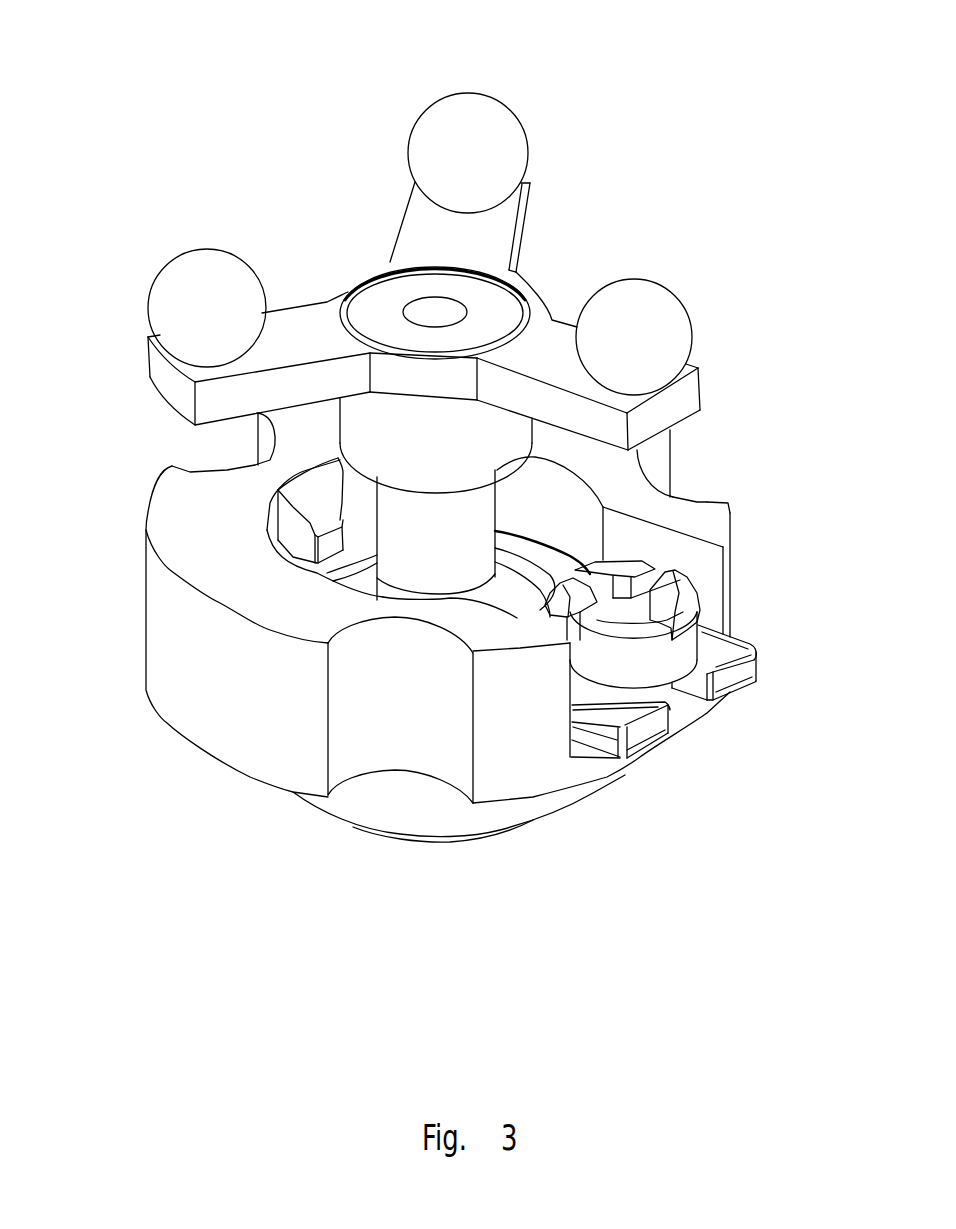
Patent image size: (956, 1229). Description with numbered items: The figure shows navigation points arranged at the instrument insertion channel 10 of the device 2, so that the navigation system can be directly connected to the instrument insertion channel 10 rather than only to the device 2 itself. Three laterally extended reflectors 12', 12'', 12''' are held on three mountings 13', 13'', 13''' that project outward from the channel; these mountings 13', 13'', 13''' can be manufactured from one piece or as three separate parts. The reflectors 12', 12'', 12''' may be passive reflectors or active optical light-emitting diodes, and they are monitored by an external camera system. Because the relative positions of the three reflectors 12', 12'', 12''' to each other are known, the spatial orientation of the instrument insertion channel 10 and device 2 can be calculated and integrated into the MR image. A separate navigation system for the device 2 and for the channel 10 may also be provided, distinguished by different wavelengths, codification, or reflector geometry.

The device 2 is at (237, 590).
The instrument insertion channel 10 is at (392, 297).
The reflector 12' is at (536, 141).
The reflector 12'' is at (161, 308).
The reflector 12''' is at (707, 323).
The mounting 13' is at (535, 229).
The mounting 13'' is at (216, 296).
The mounting 13''' is at (633, 321).